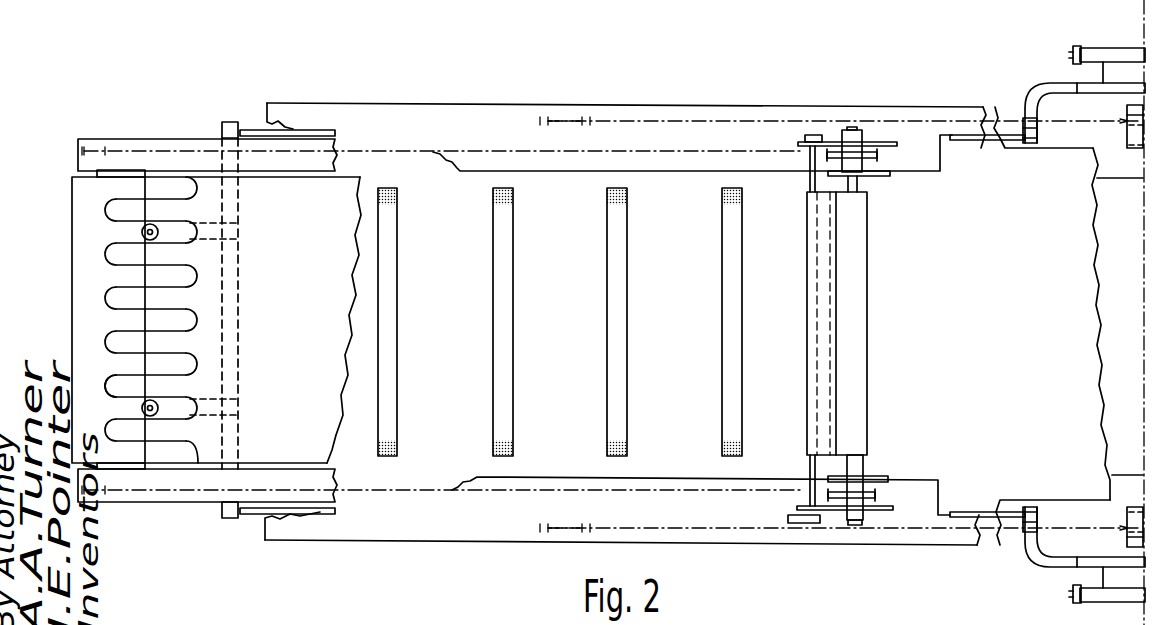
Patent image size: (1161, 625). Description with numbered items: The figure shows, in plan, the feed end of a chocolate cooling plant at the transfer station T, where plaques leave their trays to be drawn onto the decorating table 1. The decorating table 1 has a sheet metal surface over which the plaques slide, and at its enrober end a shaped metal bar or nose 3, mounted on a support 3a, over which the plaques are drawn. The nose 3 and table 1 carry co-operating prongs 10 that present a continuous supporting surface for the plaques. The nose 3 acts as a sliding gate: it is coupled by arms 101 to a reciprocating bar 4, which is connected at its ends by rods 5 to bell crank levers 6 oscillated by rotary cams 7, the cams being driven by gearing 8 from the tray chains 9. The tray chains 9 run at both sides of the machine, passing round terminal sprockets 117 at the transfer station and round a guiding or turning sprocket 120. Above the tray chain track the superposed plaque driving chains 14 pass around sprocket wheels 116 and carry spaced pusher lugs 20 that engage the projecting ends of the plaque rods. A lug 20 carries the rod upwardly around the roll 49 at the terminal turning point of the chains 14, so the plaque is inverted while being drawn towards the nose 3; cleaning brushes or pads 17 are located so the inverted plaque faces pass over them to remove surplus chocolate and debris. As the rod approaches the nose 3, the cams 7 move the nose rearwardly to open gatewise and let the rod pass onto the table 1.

The decorating table 1 is at (306, 301).
The nose 3 is at (72, 219).
The support 3a is at (116, 383).
The reciprocating bar 4 is at (224, 122).
The rods 5 is at (254, 130).
The bell crank levers 6 is at (1037, 86).
The rotary cams 7 is at (1073, 84).
The gearing 8 is at (1093, 48).
The tray chains 9 is at (933, 107).
The prongs 10 is at (140, 320).
The superposed chain 14 is at (378, 152).
The cleaning brushes or pads 17 is at (493, 274).
The pusher lug 20 is at (804, 158).
The roll 49 is at (872, 284).
The arms 101 is at (188, 232).
The sprocket wheels 116 is at (862, 160).
The terminal sprockets 117 is at (603, 116).
The guiding or turning sprocket 120 is at (1138, 146).
The transfer station T is at (836, 572).